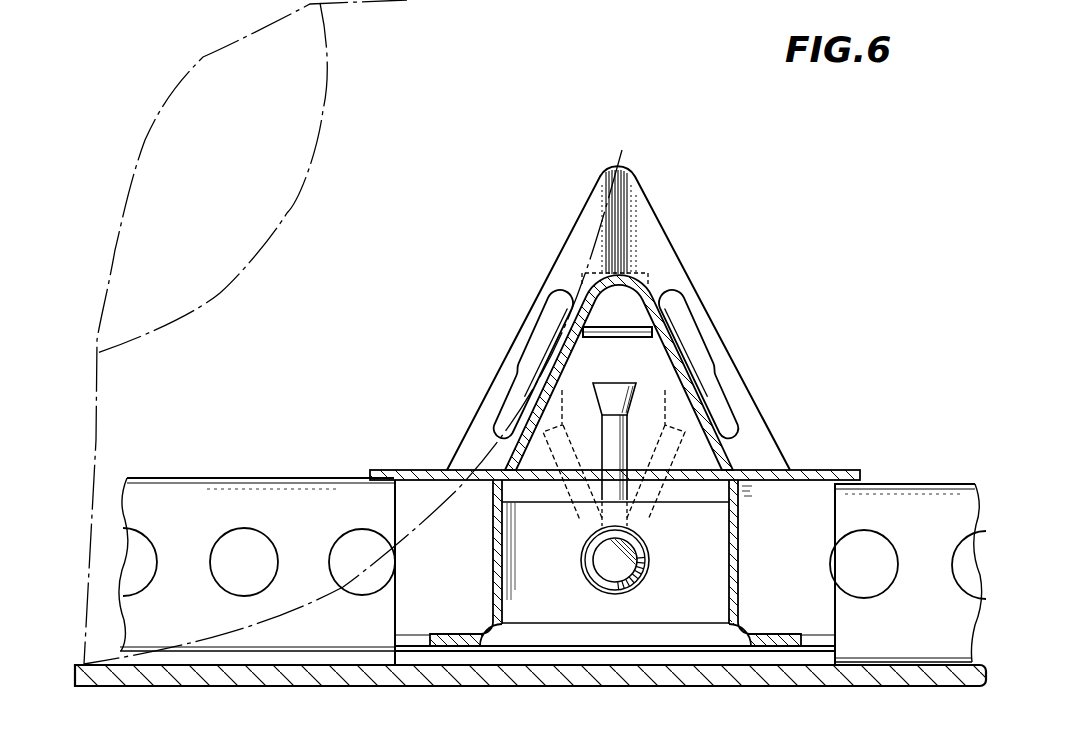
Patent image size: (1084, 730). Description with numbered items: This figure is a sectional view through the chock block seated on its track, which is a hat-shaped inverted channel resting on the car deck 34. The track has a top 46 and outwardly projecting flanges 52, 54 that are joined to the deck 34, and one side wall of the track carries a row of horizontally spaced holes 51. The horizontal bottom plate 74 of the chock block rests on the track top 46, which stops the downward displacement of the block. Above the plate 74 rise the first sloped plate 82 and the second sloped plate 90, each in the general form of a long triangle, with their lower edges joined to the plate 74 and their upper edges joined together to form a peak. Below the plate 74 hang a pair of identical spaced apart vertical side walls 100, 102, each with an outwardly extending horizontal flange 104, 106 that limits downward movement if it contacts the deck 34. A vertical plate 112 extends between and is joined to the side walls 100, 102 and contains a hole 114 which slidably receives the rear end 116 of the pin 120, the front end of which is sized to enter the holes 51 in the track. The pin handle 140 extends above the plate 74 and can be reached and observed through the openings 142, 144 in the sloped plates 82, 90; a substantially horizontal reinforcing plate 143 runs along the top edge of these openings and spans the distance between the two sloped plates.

The car deck 34 is at (558, 681).
The track top 46 is at (323, 729).
The holes 51 is at (245, 540).
The flange 52 is at (550, 604).
The flange 54 is at (615, 688).
The horizontal bottom plate 74 is at (411, 468).
The first sloped plate 82 is at (550, 250).
The second sloped plate 90 is at (685, 273).
The vertical side wall 100 is at (494, 546).
The vertical side wall 102 is at (738, 552).
The horizontal flange 104 is at (457, 641).
The horizontal flange 106 is at (778, 641).
The vertical plate 112 is at (552, 571).
The hole 114 is at (584, 578).
The rear end of pin 116 is at (624, 583).
The pin 120 is at (655, 544).
The pin handle 140 is at (610, 435).
The opening 142 is at (541, 338).
The reinforcing plate 143 is at (611, 340).
The opening 144 is at (690, 344).